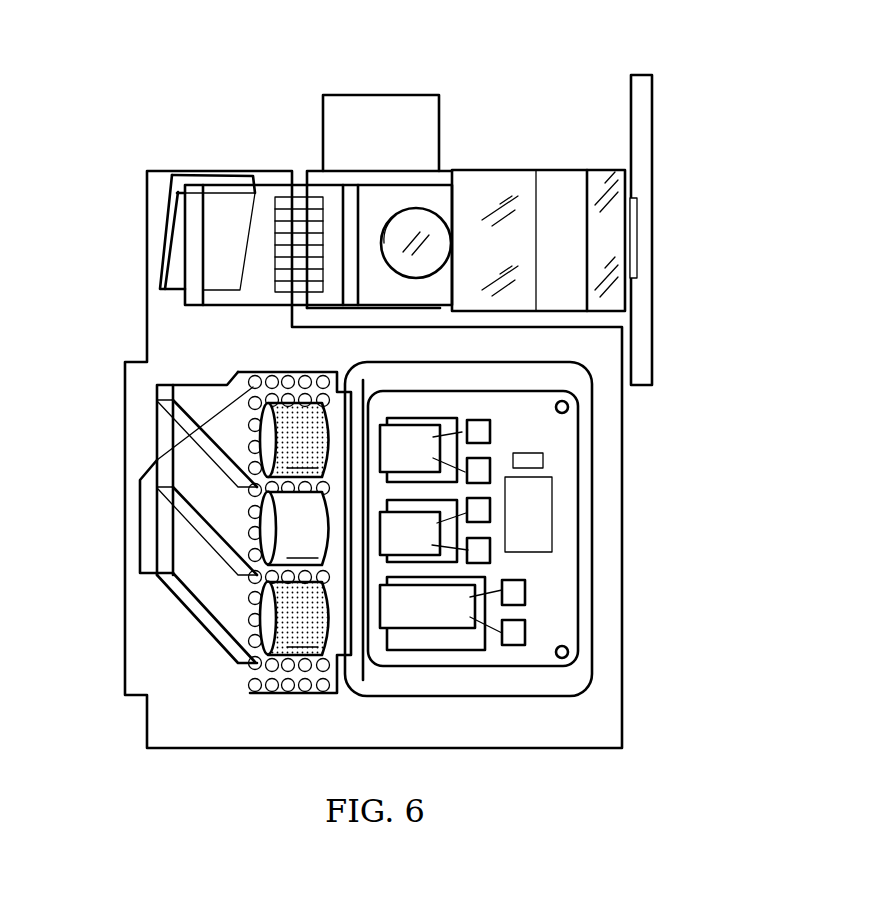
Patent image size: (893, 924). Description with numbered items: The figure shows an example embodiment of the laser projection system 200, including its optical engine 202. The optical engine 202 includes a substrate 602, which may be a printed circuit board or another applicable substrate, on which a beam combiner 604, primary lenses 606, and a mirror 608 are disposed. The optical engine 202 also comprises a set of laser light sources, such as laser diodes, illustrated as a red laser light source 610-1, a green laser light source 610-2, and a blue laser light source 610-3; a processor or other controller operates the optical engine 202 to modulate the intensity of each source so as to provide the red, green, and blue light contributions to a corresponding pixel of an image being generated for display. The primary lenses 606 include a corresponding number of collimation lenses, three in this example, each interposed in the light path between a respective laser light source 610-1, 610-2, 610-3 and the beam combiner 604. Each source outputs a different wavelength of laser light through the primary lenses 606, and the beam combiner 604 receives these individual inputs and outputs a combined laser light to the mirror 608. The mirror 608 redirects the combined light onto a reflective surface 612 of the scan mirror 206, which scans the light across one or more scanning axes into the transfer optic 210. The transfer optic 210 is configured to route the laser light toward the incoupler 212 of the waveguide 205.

The laser projection system 200 is at (186, 103).
The optical engine 202 is at (537, 722).
The waveguide 205 is at (652, 113).
The scan mirror 206 is at (320, 170).
The transfer optic 210 is at (562, 168).
The incoupler 212 is at (638, 237).
The substrate 602 is at (612, 668).
The beam combiner 604 is at (183, 633).
The primary lenses 606 is at (307, 672).
The mirror 608 is at (180, 253).
The red laser light source 610-1 is at (440, 612).
The green laser light source 610-2 is at (420, 528).
The blue laser light source 610-3 is at (425, 445).
The reflective surface 612 is at (402, 228).